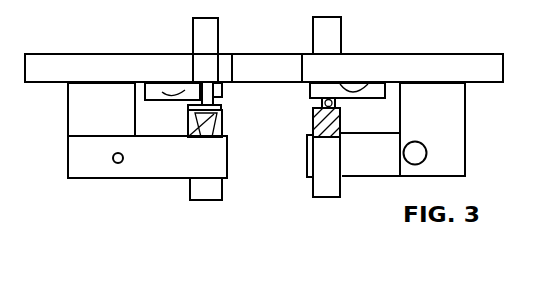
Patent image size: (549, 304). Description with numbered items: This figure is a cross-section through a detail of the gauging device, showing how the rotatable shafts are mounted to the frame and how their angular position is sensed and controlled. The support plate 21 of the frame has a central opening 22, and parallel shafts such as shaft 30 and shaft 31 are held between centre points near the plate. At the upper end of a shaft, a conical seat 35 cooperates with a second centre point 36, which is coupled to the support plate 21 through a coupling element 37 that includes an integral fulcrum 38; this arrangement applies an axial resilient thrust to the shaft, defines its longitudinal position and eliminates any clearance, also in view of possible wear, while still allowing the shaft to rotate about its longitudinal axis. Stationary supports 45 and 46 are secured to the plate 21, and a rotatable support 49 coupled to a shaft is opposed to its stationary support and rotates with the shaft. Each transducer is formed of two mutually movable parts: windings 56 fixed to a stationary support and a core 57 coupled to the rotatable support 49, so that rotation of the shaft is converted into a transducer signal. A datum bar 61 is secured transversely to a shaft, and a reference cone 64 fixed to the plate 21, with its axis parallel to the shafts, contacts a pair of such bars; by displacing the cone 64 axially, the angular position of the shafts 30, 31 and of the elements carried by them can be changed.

The support plate 21 is at (57, 68).
The central opening 22 is at (237, 68).
The shaft 30 is at (218, 200).
The shaft 31 is at (325, 190).
The conical seat 35 is at (312, 125).
The second centre point 36 is at (318, 100).
The coupling element 37 is at (153, 92).
The integral fulcrum 38 is at (178, 92).
The stationary support 45 is at (95, 108).
The stationary support 46 is at (445, 135).
The rotatable support 49 is at (88, 162).
The windings 56 is at (426, 158).
The core 57 is at (118, 163).
The datum bar 61 is at (222, 130).
The reference cone 64 is at (190, 137).